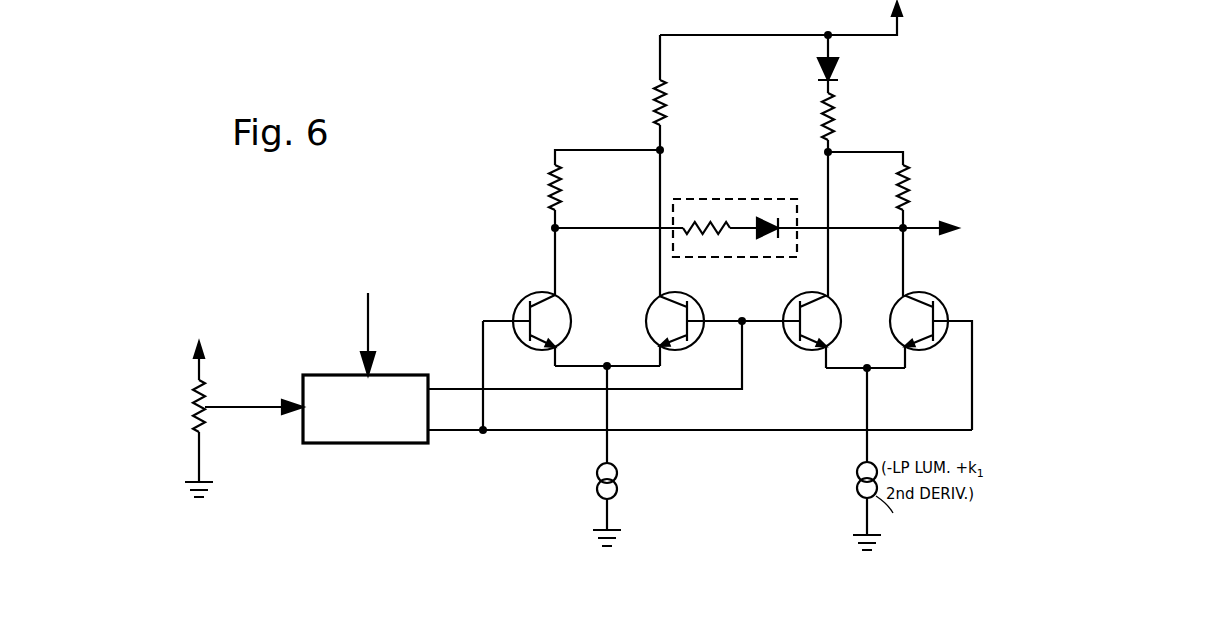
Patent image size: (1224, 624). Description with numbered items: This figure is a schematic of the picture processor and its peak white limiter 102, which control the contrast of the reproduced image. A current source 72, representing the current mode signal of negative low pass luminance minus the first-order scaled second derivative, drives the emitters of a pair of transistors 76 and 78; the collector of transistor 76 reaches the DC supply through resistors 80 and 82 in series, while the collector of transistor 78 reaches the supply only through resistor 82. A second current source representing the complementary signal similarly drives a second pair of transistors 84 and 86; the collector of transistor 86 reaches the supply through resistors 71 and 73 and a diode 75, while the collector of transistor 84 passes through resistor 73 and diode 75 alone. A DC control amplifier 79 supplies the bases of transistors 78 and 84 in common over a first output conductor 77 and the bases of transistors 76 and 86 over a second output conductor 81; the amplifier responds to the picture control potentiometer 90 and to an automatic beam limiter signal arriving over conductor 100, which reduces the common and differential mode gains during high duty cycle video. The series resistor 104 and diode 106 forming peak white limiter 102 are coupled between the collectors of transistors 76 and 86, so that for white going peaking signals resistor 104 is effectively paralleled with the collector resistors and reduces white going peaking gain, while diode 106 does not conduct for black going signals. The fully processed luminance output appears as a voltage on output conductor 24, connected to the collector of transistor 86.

The output conductor 24 is at (918, 232).
The resistor 71 is at (910, 188).
The current source 72 is at (614, 497).
The resistor 73 is at (834, 108).
The diode 75 is at (841, 67).
The transistor 76 is at (528, 300).
The first output conductor 77 is at (465, 387).
The transistor 78 is at (656, 305).
The DC control amplifier 79 is at (338, 374).
The resistor 80 is at (550, 183).
The second output conductor 81 is at (458, 433).
The resistor 82 is at (655, 100).
The transistor 84 is at (826, 308).
The transistor 86 is at (892, 318).
The picture control potentiometer 90 is at (205, 391).
The conductor 100 is at (368, 309).
The peak white limiter 102 is at (735, 231).
The resistor 104 is at (710, 215).
The diode 106 is at (760, 200).